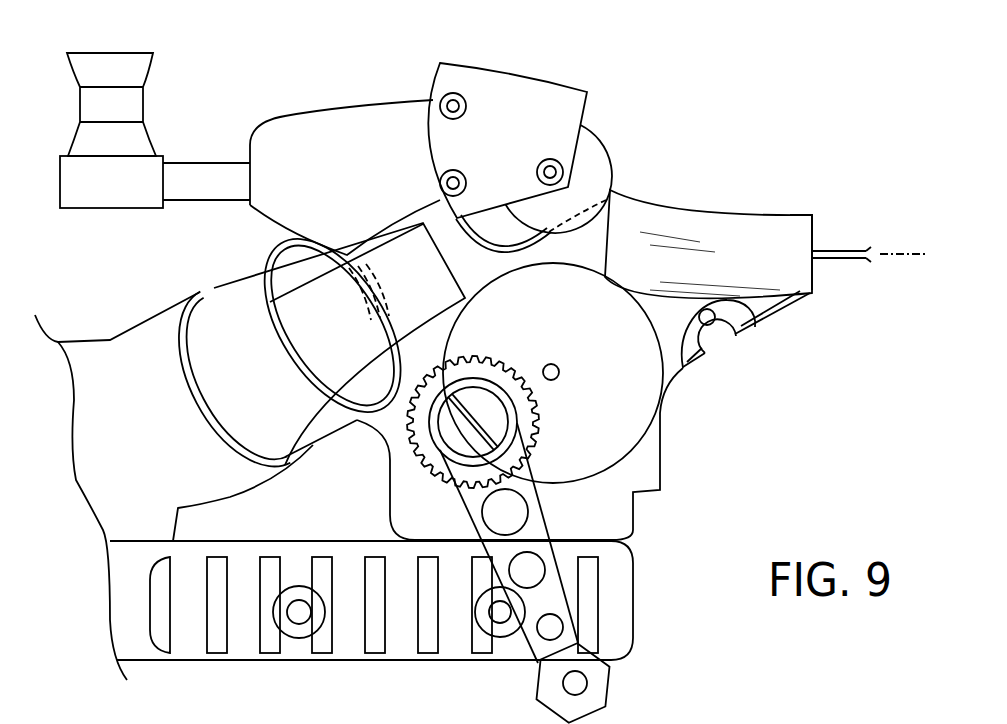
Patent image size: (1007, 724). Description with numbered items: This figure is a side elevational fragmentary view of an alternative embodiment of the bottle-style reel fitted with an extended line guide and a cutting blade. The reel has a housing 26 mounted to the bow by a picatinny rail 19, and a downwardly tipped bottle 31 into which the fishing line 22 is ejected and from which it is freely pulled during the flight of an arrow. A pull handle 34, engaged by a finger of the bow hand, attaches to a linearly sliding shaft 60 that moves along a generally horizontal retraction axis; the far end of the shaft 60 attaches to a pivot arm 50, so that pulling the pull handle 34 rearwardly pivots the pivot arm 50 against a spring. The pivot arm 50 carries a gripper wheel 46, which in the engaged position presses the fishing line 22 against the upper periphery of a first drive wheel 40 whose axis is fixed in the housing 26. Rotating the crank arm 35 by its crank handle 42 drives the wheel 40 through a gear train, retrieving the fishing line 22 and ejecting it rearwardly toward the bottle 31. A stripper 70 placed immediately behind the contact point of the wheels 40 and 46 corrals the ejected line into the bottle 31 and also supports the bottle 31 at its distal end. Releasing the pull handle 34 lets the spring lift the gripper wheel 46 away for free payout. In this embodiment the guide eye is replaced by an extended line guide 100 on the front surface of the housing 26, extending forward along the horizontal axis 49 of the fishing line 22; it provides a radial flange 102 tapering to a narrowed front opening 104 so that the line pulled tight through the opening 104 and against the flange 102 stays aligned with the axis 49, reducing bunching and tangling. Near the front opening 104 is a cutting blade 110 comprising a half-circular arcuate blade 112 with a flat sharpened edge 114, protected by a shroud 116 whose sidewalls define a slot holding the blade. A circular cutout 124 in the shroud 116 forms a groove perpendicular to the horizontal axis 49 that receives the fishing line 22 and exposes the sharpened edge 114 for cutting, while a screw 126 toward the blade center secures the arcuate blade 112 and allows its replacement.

The picatinny rail 19 is at (623, 618).
The fishing line 22 is at (867, 261).
The housing 26 is at (382, 115).
The bottle 31 is at (92, 357).
The pull handle 34 is at (143, 60).
The crank arm 35 is at (545, 512).
The first drive wheel 40 is at (627, 437).
The crank handle 42 is at (595, 695).
The gripper wheel 46 is at (595, 152).
The horizontal axis 49 is at (897, 250).
The pivot arm 50 is at (543, 95).
The linearly sliding shaft 60 is at (202, 170).
The stripper 70 is at (347, 300).
The extended line guide 100 is at (713, 200).
The radial flange 102 is at (768, 225).
The front opening 104 is at (815, 223).
The cutting blade 110 is at (773, 333).
The arcuate blade 112 is at (704, 354).
The sharpened edge 114 is at (736, 336).
The shroud 116 is at (783, 298).
The circular cutout 124 is at (724, 348).
The screw 126 is at (683, 368).